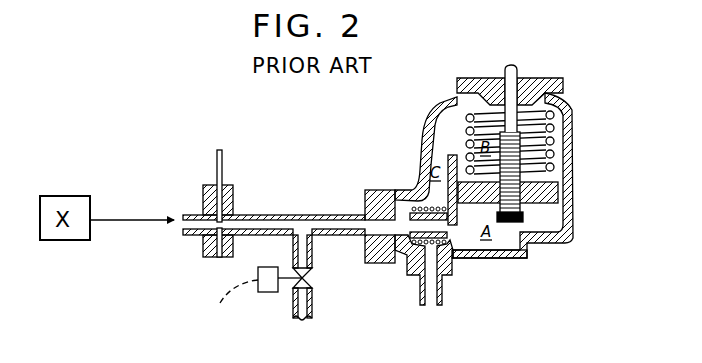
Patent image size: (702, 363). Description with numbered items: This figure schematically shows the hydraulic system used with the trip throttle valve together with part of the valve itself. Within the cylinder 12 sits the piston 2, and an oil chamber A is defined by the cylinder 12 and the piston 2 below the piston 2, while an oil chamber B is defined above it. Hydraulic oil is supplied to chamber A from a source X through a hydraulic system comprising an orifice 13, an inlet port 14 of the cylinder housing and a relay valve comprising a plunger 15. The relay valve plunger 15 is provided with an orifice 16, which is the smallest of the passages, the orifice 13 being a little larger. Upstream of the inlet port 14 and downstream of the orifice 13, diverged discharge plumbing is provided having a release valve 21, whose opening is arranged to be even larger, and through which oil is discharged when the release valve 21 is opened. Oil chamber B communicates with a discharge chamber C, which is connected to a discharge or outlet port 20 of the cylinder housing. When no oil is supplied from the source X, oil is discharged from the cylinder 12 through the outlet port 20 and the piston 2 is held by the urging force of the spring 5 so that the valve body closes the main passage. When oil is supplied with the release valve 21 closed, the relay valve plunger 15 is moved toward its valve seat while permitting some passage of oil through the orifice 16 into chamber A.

The piston 2 is at (540, 204).
The spring 5 is at (562, 128).
The cylinder 12 is at (572, 168).
The orifice 13 is at (238, 221).
The inlet port 14 is at (360, 226).
The relay valve plunger 15 is at (401, 263).
The orifice 16 is at (458, 226).
The outlet port 20 is at (430, 308).
The release valve 21 is at (284, 293).